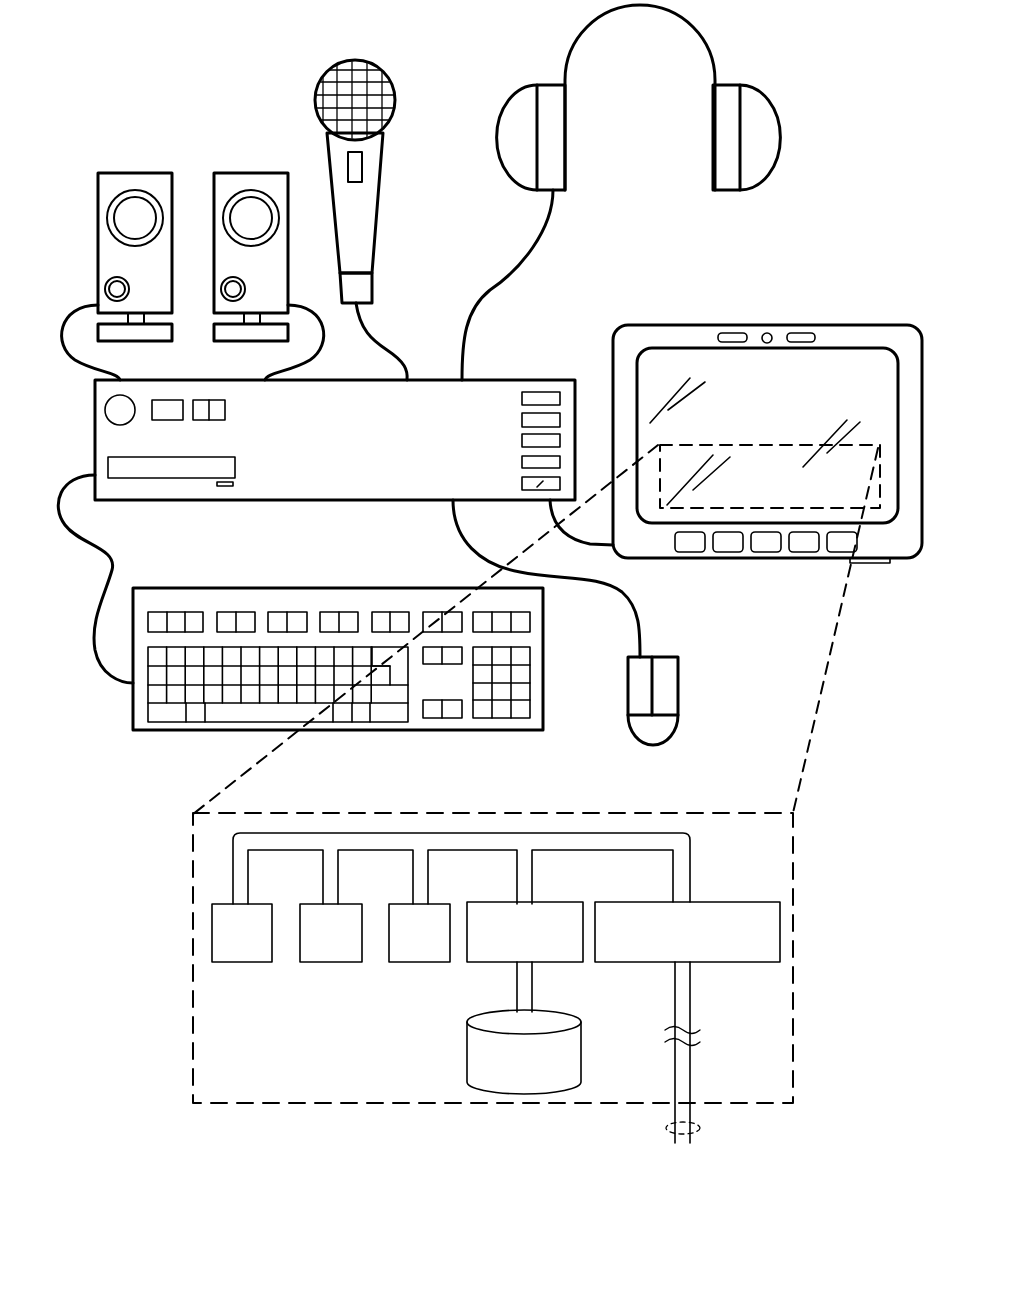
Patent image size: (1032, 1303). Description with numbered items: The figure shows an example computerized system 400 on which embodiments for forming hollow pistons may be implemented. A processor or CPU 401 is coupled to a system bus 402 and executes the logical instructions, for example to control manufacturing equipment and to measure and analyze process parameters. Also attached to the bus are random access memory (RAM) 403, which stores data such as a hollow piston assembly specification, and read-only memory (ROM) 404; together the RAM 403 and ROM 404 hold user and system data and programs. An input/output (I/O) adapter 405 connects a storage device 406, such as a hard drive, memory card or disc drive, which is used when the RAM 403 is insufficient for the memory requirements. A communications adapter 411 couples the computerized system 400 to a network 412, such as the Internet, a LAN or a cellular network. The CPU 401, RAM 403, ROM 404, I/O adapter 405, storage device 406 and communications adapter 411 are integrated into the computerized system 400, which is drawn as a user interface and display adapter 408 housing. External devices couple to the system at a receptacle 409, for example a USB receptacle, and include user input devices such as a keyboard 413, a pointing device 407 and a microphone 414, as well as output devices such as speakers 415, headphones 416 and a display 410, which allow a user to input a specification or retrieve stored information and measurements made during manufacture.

The computerized system 400 is at (183, 100).
The processor (CPU) 401 is at (250, 963).
The system bus 402 is at (560, 851).
The random access memory (RAM) 403 is at (335, 963).
The read-only memory (ROM) 404 is at (437, 963).
The input/output (I/O) adapter 405 is at (540, 963).
The storage device 406 is at (582, 1062).
The pointing device 407 is at (678, 670).
The user interface/display adapter 408 is at (93, 437).
The display adapter / receptacle 409 is at (592, 548).
The display 410 is at (855, 370).
The communications adapter 411 is at (745, 963).
The network 412 is at (700, 1122).
The keyboard 413 is at (176, 732).
The microphone 414 is at (383, 67).
The speakers 415 is at (138, 172).
The headphones 416 is at (768, 100).